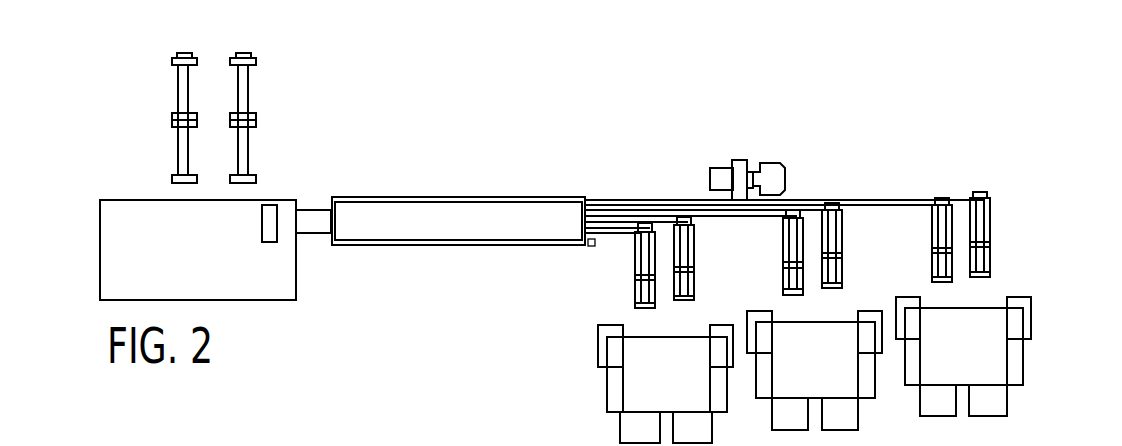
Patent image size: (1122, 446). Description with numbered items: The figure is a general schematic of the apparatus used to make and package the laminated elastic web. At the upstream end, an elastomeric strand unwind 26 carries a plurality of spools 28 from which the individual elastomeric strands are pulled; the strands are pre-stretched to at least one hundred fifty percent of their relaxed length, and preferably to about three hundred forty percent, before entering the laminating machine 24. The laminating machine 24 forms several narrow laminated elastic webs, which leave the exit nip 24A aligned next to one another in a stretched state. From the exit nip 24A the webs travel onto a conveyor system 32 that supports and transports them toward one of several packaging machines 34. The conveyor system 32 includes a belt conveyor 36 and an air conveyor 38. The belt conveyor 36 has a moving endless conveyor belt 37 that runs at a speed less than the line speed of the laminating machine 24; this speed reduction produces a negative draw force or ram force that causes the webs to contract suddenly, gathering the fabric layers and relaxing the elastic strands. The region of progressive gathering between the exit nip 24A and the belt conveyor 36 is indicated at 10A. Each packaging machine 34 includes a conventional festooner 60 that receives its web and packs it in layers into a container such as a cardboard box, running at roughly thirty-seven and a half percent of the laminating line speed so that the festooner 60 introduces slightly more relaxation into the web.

The laminated elastic web (gathering region) 10A is at (327, 201).
The laminating machine 24 is at (159, 269).
The exit nip 24A is at (284, 219).
The elastomeric strand unwind 26 is at (247, 100).
The spool 28 is at (252, 117).
The conveyor system 32 is at (574, 150).
The packaging machine 34 is at (692, 284).
The belt conveyor 36 is at (437, 197).
The conveyor belt 37 is at (449, 230).
The air conveyor 38 is at (691, 175).
The festooner 60 is at (638, 384).